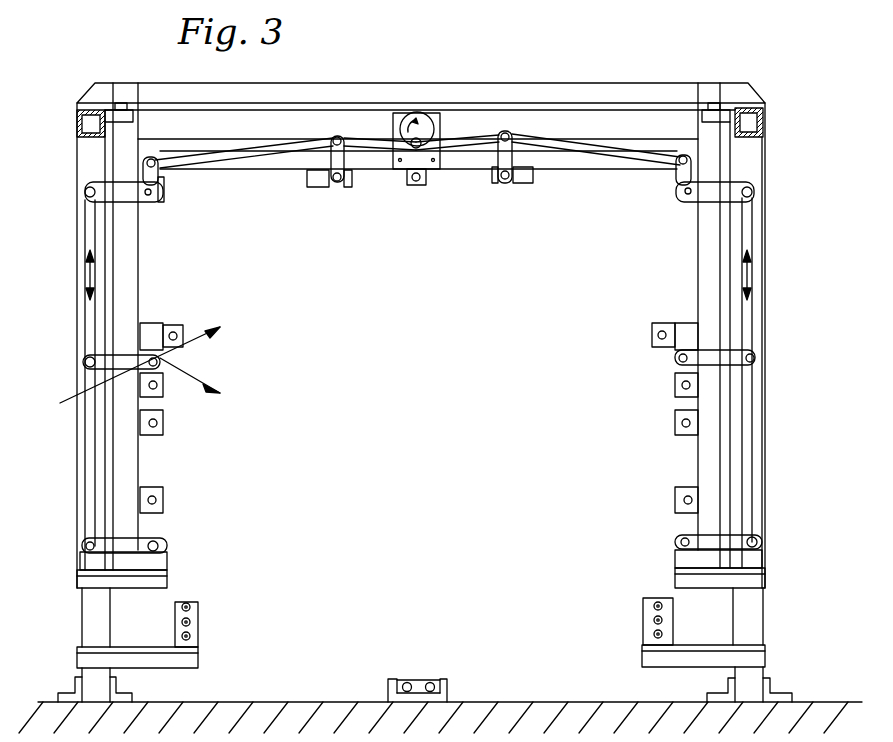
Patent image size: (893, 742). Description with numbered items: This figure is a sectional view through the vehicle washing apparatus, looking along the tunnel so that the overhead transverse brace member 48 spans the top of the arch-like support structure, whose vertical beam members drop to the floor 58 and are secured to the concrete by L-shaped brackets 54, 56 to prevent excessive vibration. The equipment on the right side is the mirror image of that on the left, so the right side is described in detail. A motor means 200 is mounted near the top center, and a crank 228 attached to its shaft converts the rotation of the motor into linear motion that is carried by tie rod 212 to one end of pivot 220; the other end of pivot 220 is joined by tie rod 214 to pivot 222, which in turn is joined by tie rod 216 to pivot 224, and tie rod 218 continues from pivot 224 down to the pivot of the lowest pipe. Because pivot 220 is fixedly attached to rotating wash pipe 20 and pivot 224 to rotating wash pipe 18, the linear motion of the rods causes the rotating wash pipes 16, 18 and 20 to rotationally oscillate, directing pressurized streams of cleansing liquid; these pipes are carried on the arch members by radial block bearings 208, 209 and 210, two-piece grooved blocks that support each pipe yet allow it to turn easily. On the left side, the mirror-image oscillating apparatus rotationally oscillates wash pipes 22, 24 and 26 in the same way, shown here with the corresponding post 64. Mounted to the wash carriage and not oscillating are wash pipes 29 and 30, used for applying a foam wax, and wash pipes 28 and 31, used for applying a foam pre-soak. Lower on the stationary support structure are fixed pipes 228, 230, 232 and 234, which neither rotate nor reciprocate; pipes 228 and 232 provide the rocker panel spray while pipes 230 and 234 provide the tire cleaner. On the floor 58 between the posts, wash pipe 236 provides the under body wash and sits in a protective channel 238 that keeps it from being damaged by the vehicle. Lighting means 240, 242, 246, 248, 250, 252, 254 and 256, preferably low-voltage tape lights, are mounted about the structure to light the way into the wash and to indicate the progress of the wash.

The overhead transverse brace member 48 is at (421, 102).
The motor means 200 is at (444, 102).
The tie rod 212 is at (452, 94).
The rotating wash pipe 22 is at (318, 188).
The crank 228 is at (305, 381).
The lighting means 250 is at (427, 206).
The pivot means 220 is at (484, 187).
The rotating wash pipe 20 is at (516, 207).
The radial block bearing 209 is at (536, 205).
The tie rod 214 is at (596, 182).
The pivot means 222 is at (718, 349).
The tie rod 216 is at (784, 383).
The post 64 is at (696, 335).
The wash pipe 30 is at (181, 313).
The wash pipe 29 is at (639, 330).
The rotating wash pipe 18 is at (668, 354).
The pivot means 224 is at (778, 345).
The radial block bearing 210 is at (636, 383).
The wash pipe 28 is at (624, 403).
The tie rod 218 is at (790, 414).
The lighting means 248 is at (637, 429).
The rotating wash pipe 24 is at (117, 376).
The wash pipe 31 is at (180, 390).
The lighting means 252 is at (182, 434).
The lighting means 254 is at (187, 500).
The rotating wash pipe 26 is at (156, 543).
The lighting means 246 is at (645, 498).
The radial block bearing 208 is at (635, 530).
The rotating wash pipe 16 is at (670, 551).
The lighting means 256 is at (226, 610).
The fixed pipe 230 is at (236, 636).
The lighting means 242 is at (615, 614).
The fixed pipe 232 is at (609, 616).
The fixed pipe 234 is at (609, 636).
The floor 58 is at (440, 690).
The wash pipe 236 is at (392, 653).
The lighting means 240 is at (438, 660).
The protective channel 238 is at (450, 676).
The L-shaped bracket 54 is at (436, 669).
The L-shaped bracket 56 is at (693, 685).